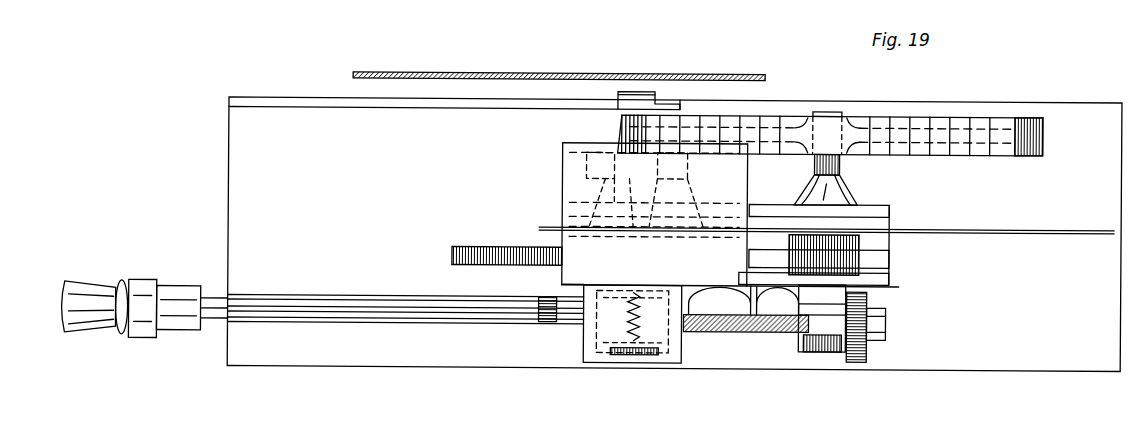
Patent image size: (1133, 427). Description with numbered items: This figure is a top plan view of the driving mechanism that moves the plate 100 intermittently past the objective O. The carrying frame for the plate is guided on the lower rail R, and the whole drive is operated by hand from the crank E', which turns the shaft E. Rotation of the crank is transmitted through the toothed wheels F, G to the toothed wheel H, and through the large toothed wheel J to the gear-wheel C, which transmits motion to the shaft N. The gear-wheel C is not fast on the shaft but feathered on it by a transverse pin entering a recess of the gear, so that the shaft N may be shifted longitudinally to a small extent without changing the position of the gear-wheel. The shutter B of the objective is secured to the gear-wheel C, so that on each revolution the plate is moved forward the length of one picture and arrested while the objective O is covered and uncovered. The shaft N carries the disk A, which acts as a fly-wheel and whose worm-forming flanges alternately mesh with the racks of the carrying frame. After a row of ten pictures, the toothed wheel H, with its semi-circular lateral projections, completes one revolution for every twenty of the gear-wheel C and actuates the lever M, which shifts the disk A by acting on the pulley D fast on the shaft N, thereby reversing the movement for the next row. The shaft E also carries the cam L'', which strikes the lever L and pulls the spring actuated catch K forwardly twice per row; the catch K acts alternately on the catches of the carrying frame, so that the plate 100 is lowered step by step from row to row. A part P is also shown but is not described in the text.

The plate 100 is at (490, 72).
The lower rail R is at (674, 223).
The pawl block P is at (656, 92).
The disk A is at (1043, 145).
The shaft N is at (842, 166).
The shutter B is at (1015, 226).
The catch K is at (655, 214).
The large toothed wheel J is at (493, 249).
The lever L is at (561, 279).
The cam L'' is at (533, 300).
The shaft E is at (405, 298).
The crank E' is at (144, 297).
The toothed wheel F is at (607, 328).
The objective O is at (626, 346).
The toothed wheel G is at (650, 352).
The toothed wheel H is at (775, 330).
The gear-wheel C is at (865, 260).
The pulley D is at (826, 348).
The lever M is at (887, 320).